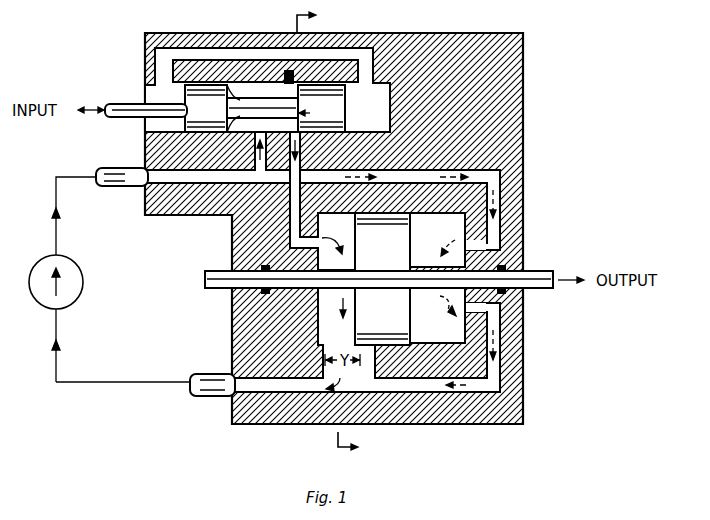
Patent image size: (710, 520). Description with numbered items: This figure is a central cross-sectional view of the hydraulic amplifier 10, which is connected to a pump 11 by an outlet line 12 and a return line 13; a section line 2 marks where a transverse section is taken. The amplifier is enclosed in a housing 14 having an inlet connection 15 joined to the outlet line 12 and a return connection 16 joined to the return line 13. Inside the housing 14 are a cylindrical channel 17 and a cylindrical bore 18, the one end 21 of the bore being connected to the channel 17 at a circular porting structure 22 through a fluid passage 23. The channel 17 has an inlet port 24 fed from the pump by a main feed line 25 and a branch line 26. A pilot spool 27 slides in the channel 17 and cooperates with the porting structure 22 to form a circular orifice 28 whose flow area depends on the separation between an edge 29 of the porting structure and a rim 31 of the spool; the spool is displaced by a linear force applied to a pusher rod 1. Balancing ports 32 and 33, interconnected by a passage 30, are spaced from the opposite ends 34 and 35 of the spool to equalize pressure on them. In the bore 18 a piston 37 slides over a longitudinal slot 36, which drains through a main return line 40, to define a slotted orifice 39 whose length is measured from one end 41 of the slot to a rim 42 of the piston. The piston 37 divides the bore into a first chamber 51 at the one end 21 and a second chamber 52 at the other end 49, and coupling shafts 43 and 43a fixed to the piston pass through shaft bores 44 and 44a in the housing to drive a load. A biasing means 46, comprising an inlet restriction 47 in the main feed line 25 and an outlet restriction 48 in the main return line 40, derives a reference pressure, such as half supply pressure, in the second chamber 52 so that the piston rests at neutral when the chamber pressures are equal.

The pusher rod 1 is at (135, 104).
The section line 2- 2 is at (333, 233).
The hydraulic amplifier 10 is at (578, 169).
The pump 11 is at (75, 265).
The outlet line 12 is at (99, 170).
The return line 13 is at (195, 396).
The housing 14 is at (271, 425).
The inlet connection 15 is at (147, 200).
The return connection 16 is at (236, 396).
The cylindrical channel 17 is at (265, 71).
The cylindrical bore 18 is at (421, 199).
The one end of cylindrical bore 21 is at (334, 304).
The circular porting structure 22 is at (303, 147).
The fluid passage 23 is at (265, 202).
The inlet port 24 is at (242, 147).
The main feed line 25 is at (190, 172).
The branch line 26 is at (247, 155).
The pilot spool 27 is at (295, 113).
The circular orifice 28 is at (288, 98).
The edge of porting structure 29 is at (295, 76).
The passage 30 is at (259, 36).
The rim of pilot spool 31 is at (321, 108).
The balancing port 32 is at (161, 80).
The balancing port 33 is at (369, 82).
The end of pilot spool 34 is at (186, 124).
The end of pilot spool 35 is at (347, 108).
The longitudinal slot 36 is at (346, 326).
The piston 37 is at (386, 279).
The slotted orifice 39 is at (383, 297).
The main return line 40 is at (270, 363).
The end of slot 41 is at (321, 351).
The rim of piston 42 is at (375, 289).
The coupling shaft 43 is at (206, 284).
The coupling shaft 43a is at (536, 271).
The shaft bore 44 is at (261, 299).
The shaft bore 44a is at (489, 245).
The biasing means 46 is at (438, 249).
The inlet restriction 47 is at (427, 259).
The outlet restriction 48 is at (452, 312).
The other end of cylindrical bore 49 is at (437, 315).
The first chamber 51 is at (332, 234).
The second chamber 52 is at (451, 231).